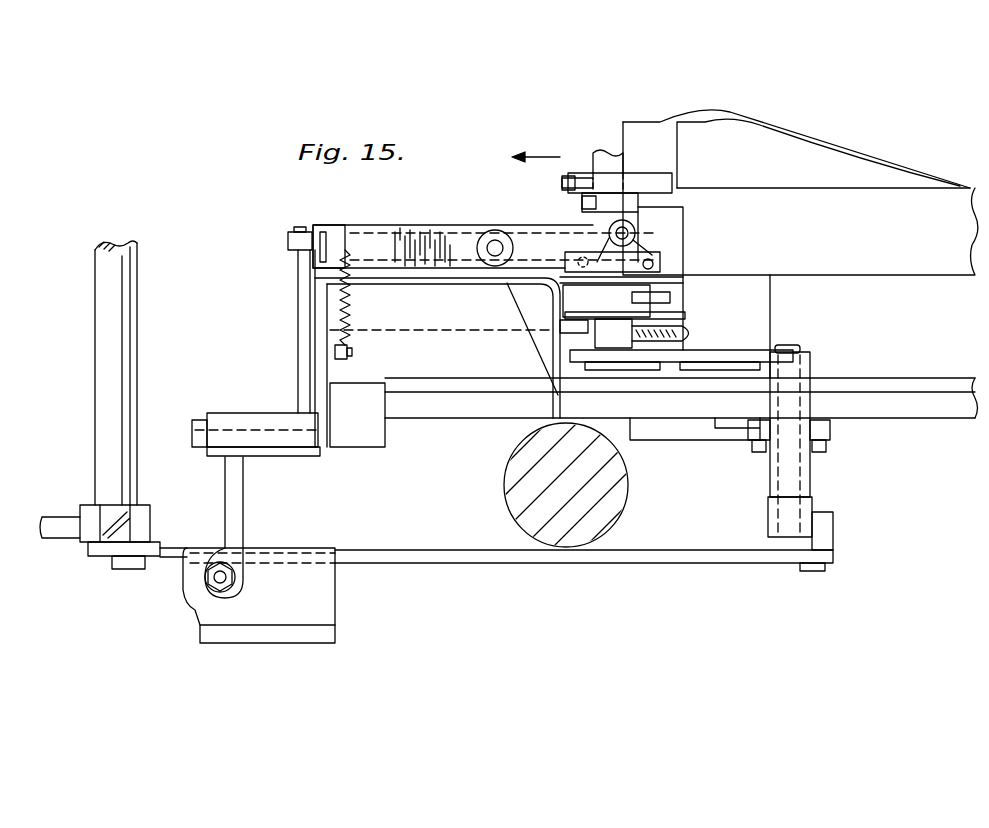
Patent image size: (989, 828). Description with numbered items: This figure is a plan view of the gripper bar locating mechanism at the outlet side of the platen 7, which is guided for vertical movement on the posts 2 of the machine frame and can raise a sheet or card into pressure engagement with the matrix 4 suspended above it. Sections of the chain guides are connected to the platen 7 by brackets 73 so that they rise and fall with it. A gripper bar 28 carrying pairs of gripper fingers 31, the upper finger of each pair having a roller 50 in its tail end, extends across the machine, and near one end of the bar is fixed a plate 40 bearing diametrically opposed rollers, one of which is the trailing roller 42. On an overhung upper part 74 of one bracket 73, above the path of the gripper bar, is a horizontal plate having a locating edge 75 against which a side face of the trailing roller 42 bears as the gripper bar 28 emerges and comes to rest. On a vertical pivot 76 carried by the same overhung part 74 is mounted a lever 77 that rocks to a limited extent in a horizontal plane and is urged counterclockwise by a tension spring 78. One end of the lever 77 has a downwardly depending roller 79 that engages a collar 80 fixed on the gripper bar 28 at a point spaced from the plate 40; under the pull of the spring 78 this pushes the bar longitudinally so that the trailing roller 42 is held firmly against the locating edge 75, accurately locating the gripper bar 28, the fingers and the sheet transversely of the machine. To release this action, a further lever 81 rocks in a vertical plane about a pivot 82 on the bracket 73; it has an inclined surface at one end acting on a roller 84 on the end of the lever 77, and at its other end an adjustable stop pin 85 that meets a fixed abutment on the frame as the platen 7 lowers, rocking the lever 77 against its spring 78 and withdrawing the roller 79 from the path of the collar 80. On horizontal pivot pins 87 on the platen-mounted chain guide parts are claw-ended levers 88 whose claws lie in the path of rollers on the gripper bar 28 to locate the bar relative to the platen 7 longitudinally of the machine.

The vertical post 2 is at (522, 480).
The matrix 4 is at (796, 149).
The platen 7 is at (800, 198).
The gripper bar 28 is at (614, 165).
The gripper fingers 31 is at (660, 184).
The plate 40 is at (586, 312).
The trailing roller 42 is at (690, 324).
The roller 50 is at (566, 183).
The bracket 73 is at (460, 367).
The overhung upper part 74 is at (522, 318).
The locating edge 75 is at (662, 290).
The vertical pivot 76 is at (495, 240).
The lever 77 is at (415, 240).
The tension spring 78 is at (352, 305).
The roller 79 is at (637, 234).
The collar 80 is at (640, 200).
The lever 81 is at (283, 420).
The pivot 82 is at (248, 425).
The roller 84 is at (296, 238).
The adjustable stop pin 85 is at (238, 582).
The horizontal pivot pin 87 is at (780, 483).
The claw-ended lever 88 is at (732, 361).